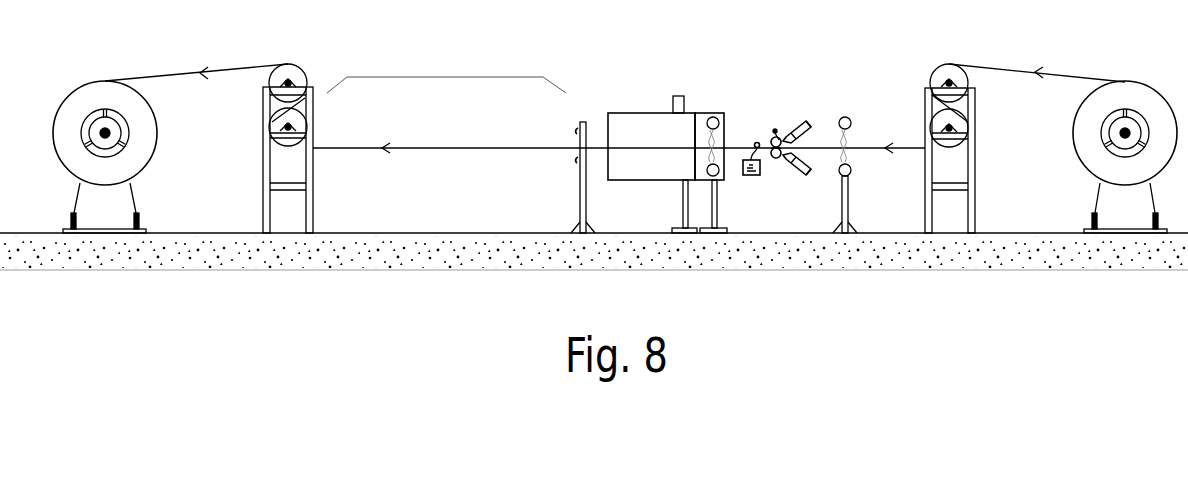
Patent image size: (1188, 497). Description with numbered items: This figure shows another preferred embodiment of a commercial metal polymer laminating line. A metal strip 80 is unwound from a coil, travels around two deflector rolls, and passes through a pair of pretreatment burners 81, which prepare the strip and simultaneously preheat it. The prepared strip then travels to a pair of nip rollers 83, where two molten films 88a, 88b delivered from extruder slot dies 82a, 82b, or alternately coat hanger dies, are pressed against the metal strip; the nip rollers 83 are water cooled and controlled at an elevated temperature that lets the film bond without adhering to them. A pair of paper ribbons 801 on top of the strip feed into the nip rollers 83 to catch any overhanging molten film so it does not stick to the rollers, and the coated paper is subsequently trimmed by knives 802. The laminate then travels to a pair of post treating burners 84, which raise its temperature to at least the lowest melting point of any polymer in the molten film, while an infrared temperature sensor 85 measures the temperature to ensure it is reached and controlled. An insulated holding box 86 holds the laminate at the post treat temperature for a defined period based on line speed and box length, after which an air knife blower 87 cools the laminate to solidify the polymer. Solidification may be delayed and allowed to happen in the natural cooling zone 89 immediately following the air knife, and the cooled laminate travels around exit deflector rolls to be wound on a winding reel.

The metal strip 80 is at (1055, 70).
The pretreatment burners 81 is at (846, 95).
The extruder slot die 82a is at (792, 120).
The extruder slot die 82b is at (800, 186).
The nip rollers 83 is at (778, 135).
The post treating burners 84 is at (707, 95).
The infrared temperature sensor 85 is at (678, 95).
The insulated holding box 86 is at (625, 95).
The air knife blower 87 is at (581, 95).
The molten film 88a is at (782, 138).
The molten film 88b is at (783, 172).
The natural cooling zone 89 is at (444, 77).
The paper ribbons 801 is at (773, 125).
The knives 802 is at (757, 142).